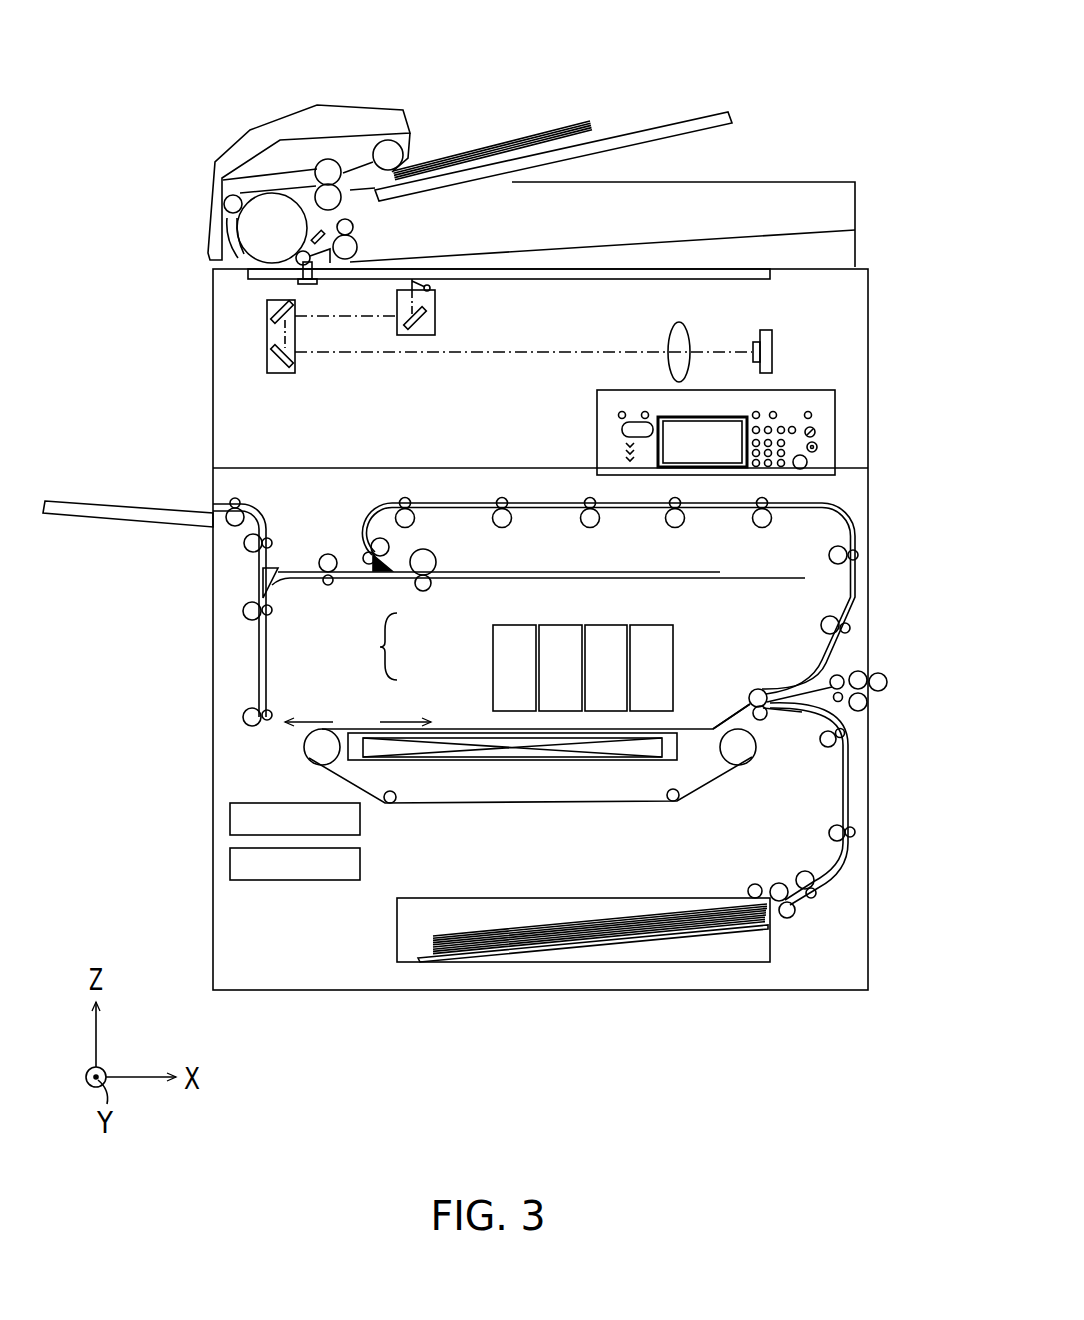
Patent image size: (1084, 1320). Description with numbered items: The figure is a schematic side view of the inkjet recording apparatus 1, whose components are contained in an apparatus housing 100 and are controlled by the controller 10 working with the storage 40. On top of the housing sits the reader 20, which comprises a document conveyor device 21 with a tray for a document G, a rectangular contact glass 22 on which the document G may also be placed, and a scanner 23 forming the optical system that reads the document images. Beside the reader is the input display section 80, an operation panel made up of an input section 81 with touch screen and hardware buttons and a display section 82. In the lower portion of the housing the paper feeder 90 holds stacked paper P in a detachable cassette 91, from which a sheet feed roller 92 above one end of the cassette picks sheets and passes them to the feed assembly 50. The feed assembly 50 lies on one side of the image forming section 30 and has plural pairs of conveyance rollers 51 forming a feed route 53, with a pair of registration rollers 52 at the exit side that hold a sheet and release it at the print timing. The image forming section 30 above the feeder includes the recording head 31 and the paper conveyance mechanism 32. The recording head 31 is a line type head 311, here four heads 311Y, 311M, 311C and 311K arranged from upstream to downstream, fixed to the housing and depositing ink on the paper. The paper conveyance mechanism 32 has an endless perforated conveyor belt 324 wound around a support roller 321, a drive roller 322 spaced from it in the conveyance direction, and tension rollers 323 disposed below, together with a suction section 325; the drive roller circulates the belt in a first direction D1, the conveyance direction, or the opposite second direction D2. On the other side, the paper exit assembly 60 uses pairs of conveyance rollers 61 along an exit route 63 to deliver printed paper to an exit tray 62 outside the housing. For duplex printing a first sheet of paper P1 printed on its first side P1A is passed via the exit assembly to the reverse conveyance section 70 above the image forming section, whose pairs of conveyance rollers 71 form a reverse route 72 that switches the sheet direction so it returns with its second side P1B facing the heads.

The inkjet recording apparatus 1 is at (837, 86).
The apparatus housing 100 is at (870, 517).
The reader 20 is at (160, 248).
The document conveyor device 21 is at (213, 202).
The document G is at (502, 143).
The contact glass 22 is at (741, 268).
The scanner 23 is at (213, 348).
The display section 82 is at (711, 418).
The input section 81 is at (780, 390).
The input display section 80 is at (820, 390).
The exit tray 62 is at (70, 500).
The paper exit assembly 60 is at (278, 633).
The conveyance rollers 61 is at (232, 548).
The exit route 63 is at (257, 566).
The reverse conveyance section 70 is at (460, 493).
The conveyance rollers 71 is at (350, 530).
The reverse route 72 is at (538, 503).
The head 311 is at (441, 597).
The head 311K is at (493, 625).
The head 311C is at (548, 625).
The head 311M is at (606, 625).
The head 311Y is at (669, 625).
The image forming section 30 is at (370, 646).
The recording head 31 is at (481, 640).
The paper conveyance mechanism 32 is at (456, 722).
The suction section 325 is at (468, 760).
The drive roller 322 is at (333, 762).
The support roller 321 is at (735, 770).
The tension rollers 323 is at (400, 798).
The conveyor belt 324 is at (543, 805).
The first direction D1 is at (303, 722).
The second direction D2 is at (417, 722).
The pair of registration rollers 52 is at (757, 688).
The first sheet of paper P1 is at (743, 691).
The first side P1A is at (745, 722).
The second side P1B is at (762, 721).
The feed assembly 50 is at (834, 810).
The feed route 53 is at (853, 795).
The conveyance rollers 51 is at (859, 845).
The controller 10 is at (230, 815).
The storage 40 is at (230, 860).
The paper feeder 90 is at (314, 938).
The sheet feed roller 92 is at (757, 883).
The paper P is at (450, 935).
The cassette 91 is at (400, 948).